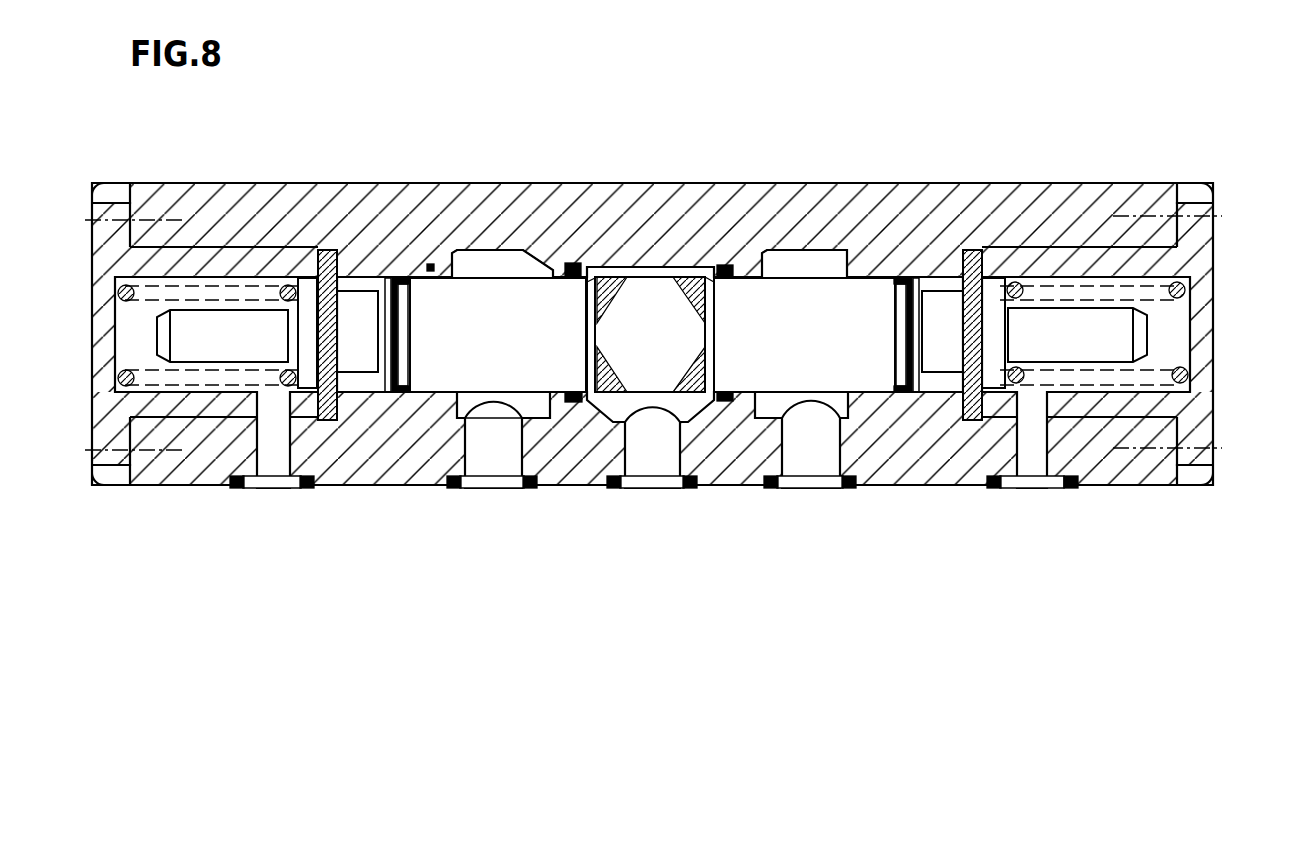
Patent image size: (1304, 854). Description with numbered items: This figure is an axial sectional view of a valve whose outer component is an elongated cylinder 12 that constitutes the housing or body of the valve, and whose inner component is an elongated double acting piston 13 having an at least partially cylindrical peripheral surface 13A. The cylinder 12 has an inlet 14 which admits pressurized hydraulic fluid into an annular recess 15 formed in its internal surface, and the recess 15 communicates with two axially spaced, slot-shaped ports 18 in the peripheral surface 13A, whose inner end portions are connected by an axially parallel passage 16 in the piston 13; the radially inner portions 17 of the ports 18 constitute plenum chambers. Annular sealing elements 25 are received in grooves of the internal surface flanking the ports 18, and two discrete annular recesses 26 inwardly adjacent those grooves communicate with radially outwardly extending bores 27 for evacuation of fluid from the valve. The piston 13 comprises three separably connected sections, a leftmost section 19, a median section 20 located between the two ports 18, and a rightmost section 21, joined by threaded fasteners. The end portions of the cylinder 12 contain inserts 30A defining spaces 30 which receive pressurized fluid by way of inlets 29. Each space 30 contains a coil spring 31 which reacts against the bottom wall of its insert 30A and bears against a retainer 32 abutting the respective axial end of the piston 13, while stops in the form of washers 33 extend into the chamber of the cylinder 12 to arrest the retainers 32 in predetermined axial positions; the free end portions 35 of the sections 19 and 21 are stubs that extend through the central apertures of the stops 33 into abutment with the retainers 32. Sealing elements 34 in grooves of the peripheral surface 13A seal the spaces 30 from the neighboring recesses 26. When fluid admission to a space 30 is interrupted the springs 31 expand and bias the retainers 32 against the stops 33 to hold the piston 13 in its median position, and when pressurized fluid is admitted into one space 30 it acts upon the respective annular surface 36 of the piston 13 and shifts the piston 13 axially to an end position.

The cylinder 12 is at (766, 210).
The piston 13 is at (388, 278).
The peripheral surface 13A is at (431, 266).
The inlet 14 is at (650, 458).
The annular recess 15 is at (644, 268).
The passage 16 is at (614, 297).
The plenum chamber 17 is at (594, 375).
The port 18 is at (594, 282).
The leftmost piston section 19 is at (463, 348).
The median piston section 20 is at (633, 346).
The rightmost piston section 21 is at (800, 348).
The annular sealing element 25 is at (572, 264).
The annular recess 26 is at (496, 256).
The bore 27 is at (490, 460).
The inlet 29 is at (271, 455).
The space 30 is at (135, 344).
The insert 30A is at (108, 262).
The coil spring 31 is at (162, 386).
The retainer 32 is at (304, 298).
The stop 33 is at (975, 248).
The sealing element 34 is at (395, 278).
The free end portion 35 is at (343, 348).
The annular surface 36 is at (372, 390).